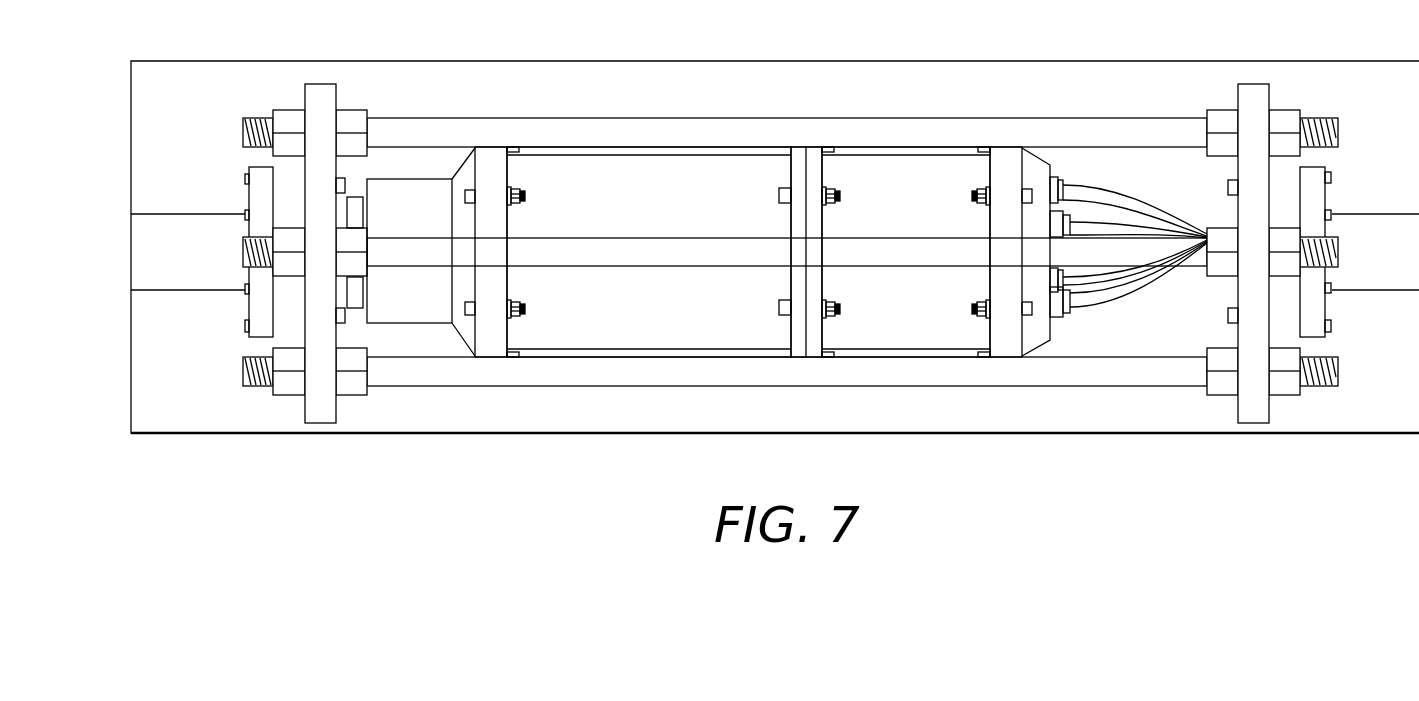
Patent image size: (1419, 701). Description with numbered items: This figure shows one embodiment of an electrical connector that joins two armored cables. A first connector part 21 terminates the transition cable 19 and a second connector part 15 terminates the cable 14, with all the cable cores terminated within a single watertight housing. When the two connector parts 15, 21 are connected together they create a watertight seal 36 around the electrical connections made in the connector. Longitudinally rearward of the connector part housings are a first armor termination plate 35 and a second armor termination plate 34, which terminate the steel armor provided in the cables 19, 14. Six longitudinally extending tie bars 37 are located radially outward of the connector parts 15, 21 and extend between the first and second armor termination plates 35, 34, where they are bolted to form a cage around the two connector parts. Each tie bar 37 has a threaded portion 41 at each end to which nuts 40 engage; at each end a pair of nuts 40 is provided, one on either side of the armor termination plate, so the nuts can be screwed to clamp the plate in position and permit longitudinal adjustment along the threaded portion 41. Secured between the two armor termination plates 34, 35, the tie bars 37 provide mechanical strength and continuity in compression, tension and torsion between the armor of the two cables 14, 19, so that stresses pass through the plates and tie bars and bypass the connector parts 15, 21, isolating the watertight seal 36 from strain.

The cable 14 is at (1375, 227).
The second connector part 15 is at (915, 170).
The transition cable 19 is at (182, 227).
The first connector part 21 is at (650, 170).
The second armor termination plate 34 is at (1254, 92).
The first armor termination plate 35 is at (322, 93).
The watertight seal 36 is at (800, 158).
The tie bar 37 is at (787, 377).
The nut 40 is at (1223, 390).
The threaded portion 41 is at (1338, 372).